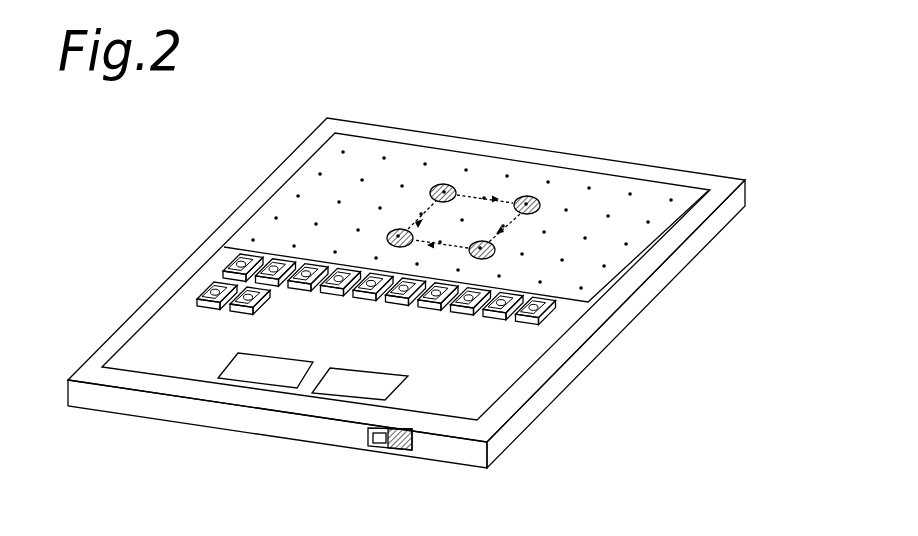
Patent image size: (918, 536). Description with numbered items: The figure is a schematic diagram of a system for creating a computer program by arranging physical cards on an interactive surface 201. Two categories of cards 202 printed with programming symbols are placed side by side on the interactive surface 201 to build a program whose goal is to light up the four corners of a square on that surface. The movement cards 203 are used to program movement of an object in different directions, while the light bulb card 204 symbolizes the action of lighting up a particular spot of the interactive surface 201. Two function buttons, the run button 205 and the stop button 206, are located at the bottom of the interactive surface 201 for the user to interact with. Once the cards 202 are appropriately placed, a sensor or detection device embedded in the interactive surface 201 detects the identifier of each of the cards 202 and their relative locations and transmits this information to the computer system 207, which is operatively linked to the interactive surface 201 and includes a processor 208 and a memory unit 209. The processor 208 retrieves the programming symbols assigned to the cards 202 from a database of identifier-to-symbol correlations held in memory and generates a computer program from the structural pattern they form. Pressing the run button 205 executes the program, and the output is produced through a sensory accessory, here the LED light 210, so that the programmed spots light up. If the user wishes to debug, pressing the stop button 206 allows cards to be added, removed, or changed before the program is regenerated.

The interactive surface 201 is at (738, 198).
The cards 202 is at (243, 291).
The movement cards 203 is at (316, 262).
The light bulb card 204 is at (433, 313).
The run button 205 is at (218, 378).
The stop button 206 is at (330, 393).
The computer system 207 is at (408, 460).
The processor 208 is at (412, 443).
The memory unit 209 is at (365, 445).
The LED light 210 is at (480, 241).